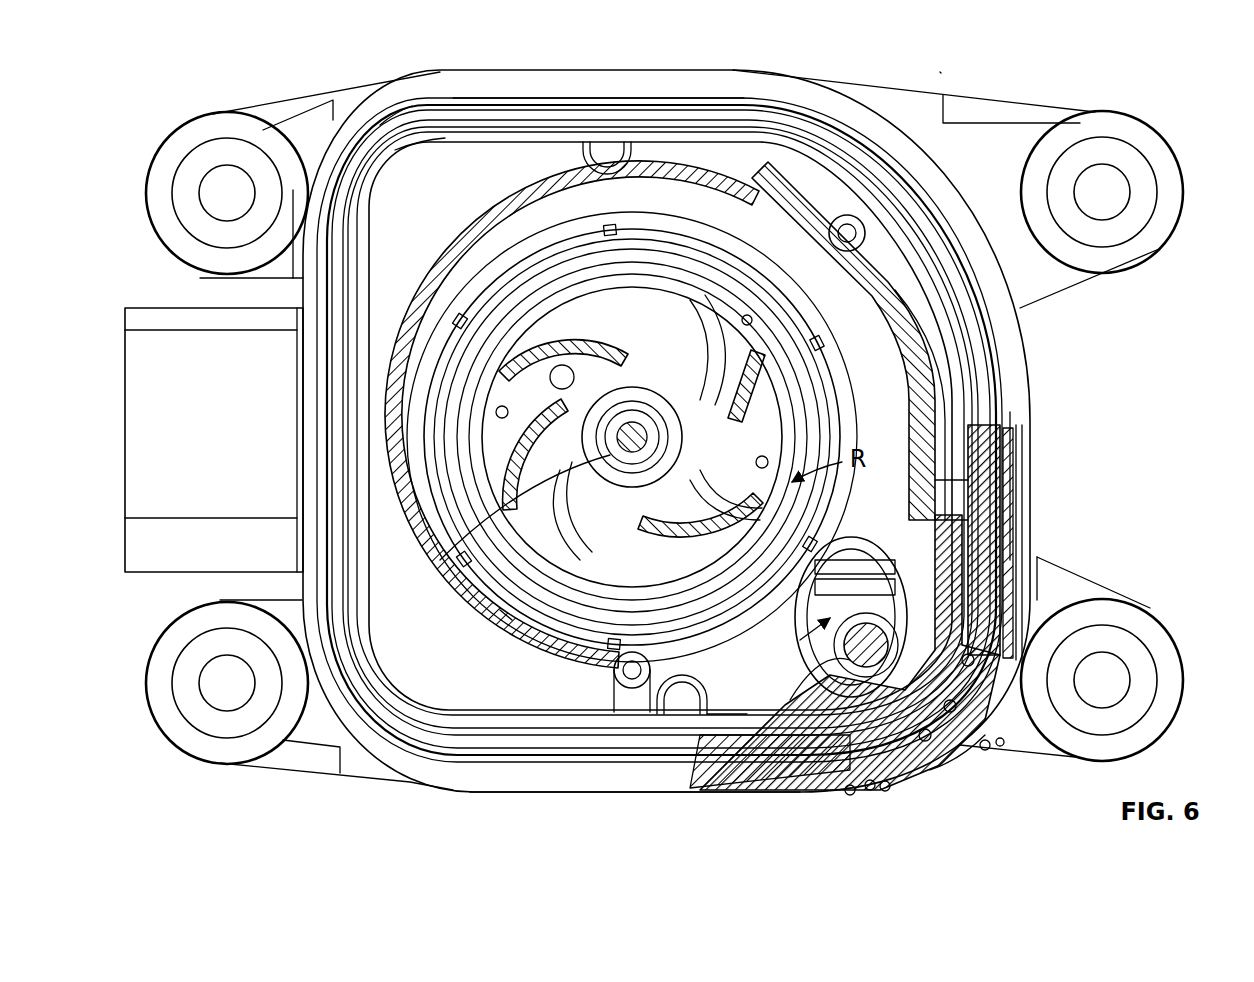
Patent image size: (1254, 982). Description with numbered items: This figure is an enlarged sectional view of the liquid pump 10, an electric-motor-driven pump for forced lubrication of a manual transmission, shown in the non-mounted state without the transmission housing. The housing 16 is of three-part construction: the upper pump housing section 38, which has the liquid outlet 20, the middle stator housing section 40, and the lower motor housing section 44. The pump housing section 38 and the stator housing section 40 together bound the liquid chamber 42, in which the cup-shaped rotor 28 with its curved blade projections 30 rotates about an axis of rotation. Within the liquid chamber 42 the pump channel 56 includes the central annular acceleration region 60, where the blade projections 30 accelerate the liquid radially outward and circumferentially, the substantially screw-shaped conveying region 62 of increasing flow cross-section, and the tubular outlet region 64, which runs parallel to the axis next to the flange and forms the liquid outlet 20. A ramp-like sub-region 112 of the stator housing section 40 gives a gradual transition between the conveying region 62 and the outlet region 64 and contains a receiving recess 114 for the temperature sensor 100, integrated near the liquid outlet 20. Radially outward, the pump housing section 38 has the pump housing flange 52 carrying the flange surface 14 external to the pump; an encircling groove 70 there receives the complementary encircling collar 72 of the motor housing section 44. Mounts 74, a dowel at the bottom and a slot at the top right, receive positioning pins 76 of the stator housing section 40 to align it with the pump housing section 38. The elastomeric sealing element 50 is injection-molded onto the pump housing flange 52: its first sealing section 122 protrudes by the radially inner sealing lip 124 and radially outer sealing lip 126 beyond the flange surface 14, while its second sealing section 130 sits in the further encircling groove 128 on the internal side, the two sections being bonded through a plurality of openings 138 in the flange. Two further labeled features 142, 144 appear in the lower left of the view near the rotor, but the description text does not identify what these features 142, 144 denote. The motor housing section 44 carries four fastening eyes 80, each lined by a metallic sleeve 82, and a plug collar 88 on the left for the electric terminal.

The liquid pump 10 is at (942, 72).
The flange surface external to the pump 14 is at (462, 90).
The housing 16 is at (508, 800).
The liquid outlet 20 is at (790, 643).
The rotor 28 is at (574, 320).
The blade projections 30 is at (655, 350).
The pump housing section 38 is at (460, 248).
The stator housing section 40 is at (520, 241).
The liquid chamber 42 is at (562, 214).
The motor housing section 44 is at (1014, 520).
The sealing element 50 is at (1006, 542).
The pump housing flange 52 is at (885, 786).
The pump channel 56 is at (900, 398).
The acceleration region 60 is at (770, 405).
The conveying region 62 is at (855, 302).
The outlet region 64 is at (793, 680).
The encircling groove 70 is at (776, 795).
The encircling collar 72 is at (822, 790).
The mounts 74 is at (818, 220).
The positioning pins 76 is at (838, 246).
The fastening eyes 80 is at (197, 137).
The metallic sleeve 82 is at (269, 193).
The plug collar 88 is at (203, 440).
The temperature sensor 100 is at (870, 607).
The sub-region of the stator housing section 112 is at (857, 565).
The receiving recess 114 is at (978, 770).
The first sealing section 122 is at (725, 120).
The radially inner sealing lip 124 is at (424, 140).
The radially outer sealing lip 126 is at (405, 120).
The encircling groove 128 is at (1007, 493).
The second sealing section 130 is at (965, 505).
The openings 138 is at (870, 785).
The seal 142 is at (515, 618).
The shaft axis 144 is at (632, 437).